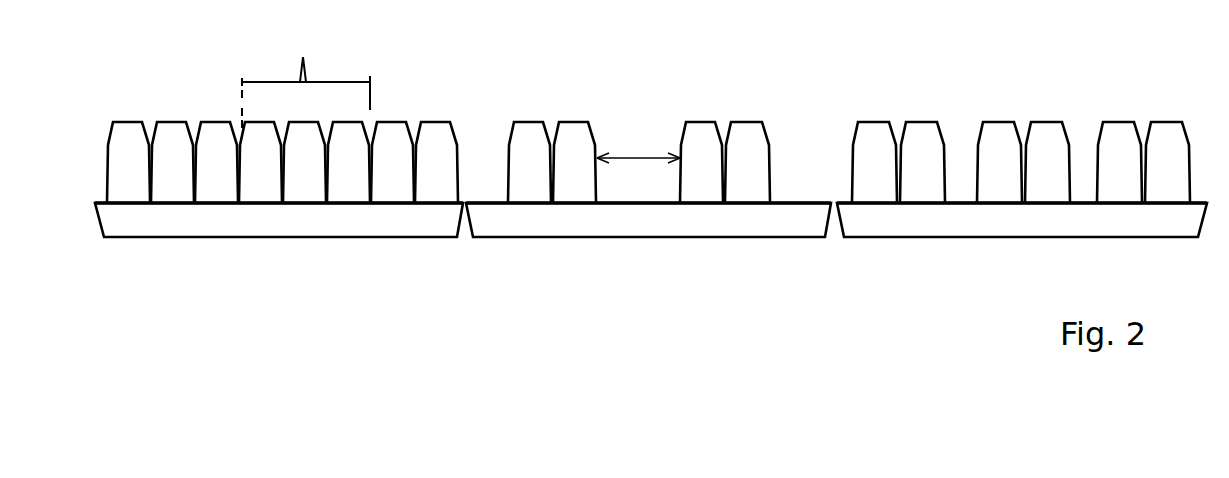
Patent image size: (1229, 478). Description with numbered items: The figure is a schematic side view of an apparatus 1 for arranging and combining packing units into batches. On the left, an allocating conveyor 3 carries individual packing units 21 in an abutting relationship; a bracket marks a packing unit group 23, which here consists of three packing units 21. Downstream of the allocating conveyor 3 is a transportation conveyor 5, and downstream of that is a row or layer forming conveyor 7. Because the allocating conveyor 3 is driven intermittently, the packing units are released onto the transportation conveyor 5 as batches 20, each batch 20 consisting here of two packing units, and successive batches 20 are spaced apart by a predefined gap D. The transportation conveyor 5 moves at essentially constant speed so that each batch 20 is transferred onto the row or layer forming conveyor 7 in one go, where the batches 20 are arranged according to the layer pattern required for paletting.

The apparatus 1 is at (731, 272).
The allocating conveyor 3 is at (243, 237).
The transportation conveyor 5 is at (610, 237).
The row or layer forming conveyor 7 is at (1003, 238).
The batch 20 is at (552, 160).
The packing unit 21 is at (218, 122).
The packing unit group 23 is at (276, 82).
The predefined gap D is at (637, 157).